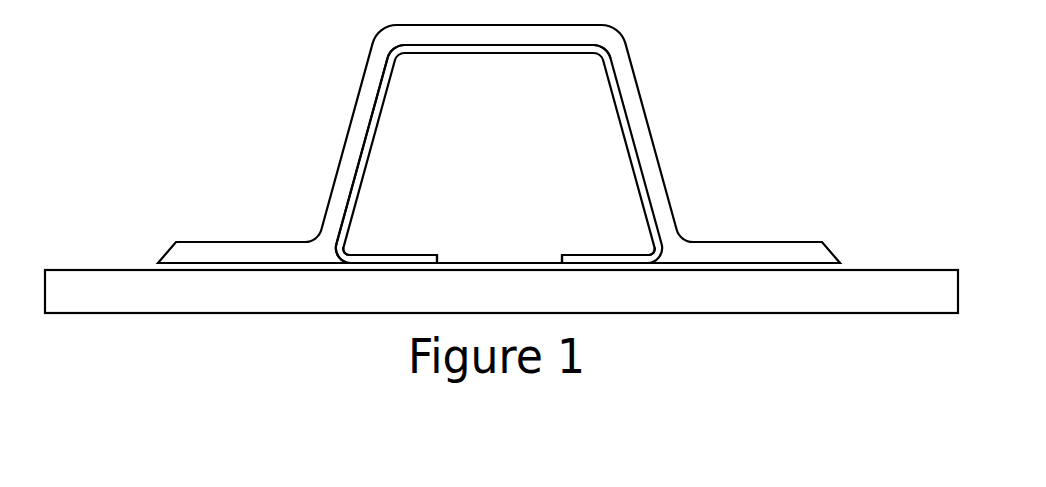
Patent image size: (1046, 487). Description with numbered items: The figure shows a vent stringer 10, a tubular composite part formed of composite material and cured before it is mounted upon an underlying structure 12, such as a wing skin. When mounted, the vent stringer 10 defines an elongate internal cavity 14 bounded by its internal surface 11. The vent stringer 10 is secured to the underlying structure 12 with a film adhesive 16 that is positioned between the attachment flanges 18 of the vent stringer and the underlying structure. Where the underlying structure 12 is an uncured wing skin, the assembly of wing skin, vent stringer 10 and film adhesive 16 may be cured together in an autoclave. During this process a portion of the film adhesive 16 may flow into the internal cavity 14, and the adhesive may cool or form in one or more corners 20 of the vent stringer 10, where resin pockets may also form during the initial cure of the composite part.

The vent stringer 10 is at (682, 100).
The internal surface 11 is at (378, 140).
The underlying structure 12 is at (897, 304).
The internal cavity 14 is at (513, 182).
The film adhesive 16 is at (403, 271).
The attachment flanges 18 is at (387, 254).
The corners 20 is at (410, 67).